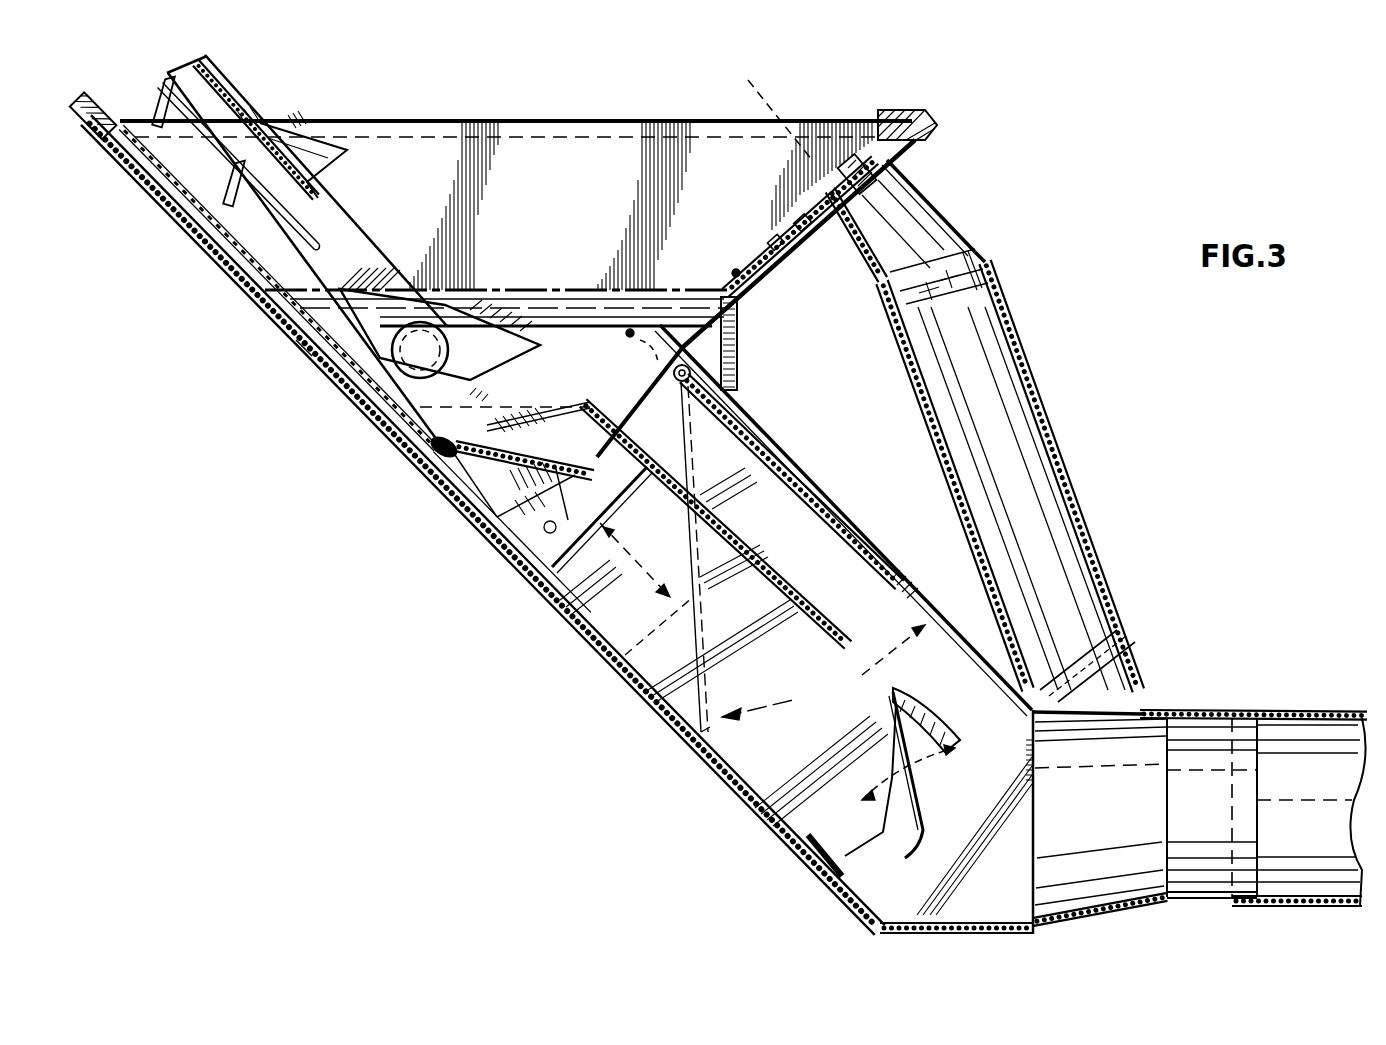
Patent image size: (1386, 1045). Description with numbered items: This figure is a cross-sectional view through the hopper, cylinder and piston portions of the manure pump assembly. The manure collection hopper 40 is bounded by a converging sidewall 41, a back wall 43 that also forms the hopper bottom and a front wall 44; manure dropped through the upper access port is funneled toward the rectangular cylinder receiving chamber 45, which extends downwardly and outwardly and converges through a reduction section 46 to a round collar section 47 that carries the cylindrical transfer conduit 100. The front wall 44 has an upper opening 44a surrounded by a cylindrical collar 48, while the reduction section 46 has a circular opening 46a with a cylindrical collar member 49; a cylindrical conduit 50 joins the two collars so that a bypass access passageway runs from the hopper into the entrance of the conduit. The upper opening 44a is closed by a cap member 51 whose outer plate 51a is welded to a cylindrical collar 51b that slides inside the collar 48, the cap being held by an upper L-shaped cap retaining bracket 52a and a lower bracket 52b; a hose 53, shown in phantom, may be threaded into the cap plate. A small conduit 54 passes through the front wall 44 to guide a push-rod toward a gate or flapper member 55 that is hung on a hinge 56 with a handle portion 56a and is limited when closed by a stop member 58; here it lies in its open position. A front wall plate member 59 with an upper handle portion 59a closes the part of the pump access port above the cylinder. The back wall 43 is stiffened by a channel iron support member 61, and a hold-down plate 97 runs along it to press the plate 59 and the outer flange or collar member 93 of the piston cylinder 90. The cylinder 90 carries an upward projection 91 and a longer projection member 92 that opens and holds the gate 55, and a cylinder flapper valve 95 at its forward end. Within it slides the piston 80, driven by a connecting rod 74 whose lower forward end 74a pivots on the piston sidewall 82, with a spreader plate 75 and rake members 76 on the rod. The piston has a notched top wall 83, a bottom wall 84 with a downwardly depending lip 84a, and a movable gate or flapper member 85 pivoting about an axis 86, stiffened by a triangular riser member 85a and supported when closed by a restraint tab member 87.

The manure collection hopper 40 is at (436, 100).
The sidewall 41 is at (541, 136).
The back wall 43 is at (197, 242).
The front wall 44 is at (714, 294).
The upper opening 44a is at (841, 138).
The cylinder receiving chamber 45 is at (819, 474).
The reduction section 46 is at (1078, 835).
The circular opening 46a is at (1096, 716).
The round collar section 47 is at (1213, 713).
The cylindrical collar 48 is at (948, 219).
The cylindrical collar member 49 is at (1143, 692).
The cylindrical conduit 50 is at (1066, 456).
The cap member 51 is at (869, 120).
The outer plate 51a is at (802, 214).
The cylindrical collar 51b is at (911, 177).
The upper L-shaped cap retaining bracket 52a is at (906, 116).
The lower L-shaped cap retaining bracket 52b is at (773, 235).
The hose 53 is at (780, 87).
The conduit 54 is at (739, 380).
The gate or flapper member 55 is at (762, 433).
The hinge 56 is at (668, 325).
The handle portion 56a is at (623, 346).
The stop member 58 is at (667, 557).
The front wall plate member 59 is at (628, 330).
The upper handle portion 59a is at (735, 270).
The channel iron support member 61 is at (80, 134).
The connecting rod 74 is at (338, 218).
The lower forward end of connecting rod 74a is at (449, 351).
The spreader plate 75 is at (232, 97).
The rake members 76 is at (160, 103).
The piston 80 is at (458, 308).
The sidewall 82 is at (462, 401).
The top wall 83 is at (609, 520).
The bottom wall 84 is at (405, 405).
The downwardly depending lip 84a is at (300, 346).
The movable gate or flapper member 85 is at (575, 459).
The triangular riser member 85a is at (484, 542).
The axis 86 is at (428, 456).
The restraint tab member 87 is at (562, 421).
The piston cylinder 90 is at (762, 553).
The upward projection 91 is at (698, 439).
The projection member 92 is at (846, 590).
The outer flange or collar member 93 is at (622, 401).
The cylinder flapper valve 95 is at (925, 833).
The hold-down plate 97 is at (132, 167).
The cylindrical transfer conduit 100 is at (1311, 712).